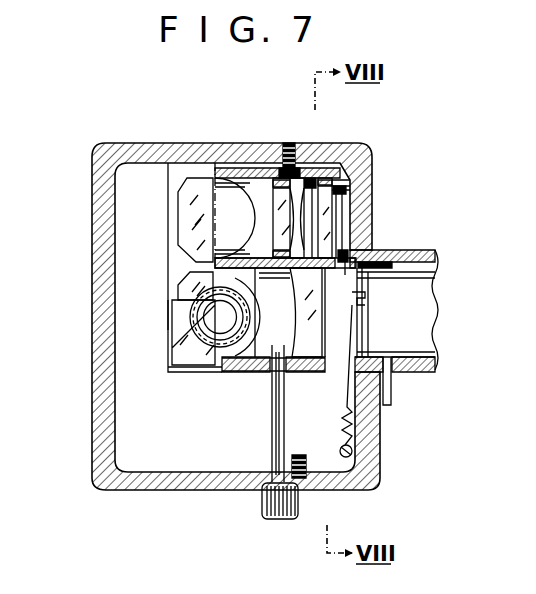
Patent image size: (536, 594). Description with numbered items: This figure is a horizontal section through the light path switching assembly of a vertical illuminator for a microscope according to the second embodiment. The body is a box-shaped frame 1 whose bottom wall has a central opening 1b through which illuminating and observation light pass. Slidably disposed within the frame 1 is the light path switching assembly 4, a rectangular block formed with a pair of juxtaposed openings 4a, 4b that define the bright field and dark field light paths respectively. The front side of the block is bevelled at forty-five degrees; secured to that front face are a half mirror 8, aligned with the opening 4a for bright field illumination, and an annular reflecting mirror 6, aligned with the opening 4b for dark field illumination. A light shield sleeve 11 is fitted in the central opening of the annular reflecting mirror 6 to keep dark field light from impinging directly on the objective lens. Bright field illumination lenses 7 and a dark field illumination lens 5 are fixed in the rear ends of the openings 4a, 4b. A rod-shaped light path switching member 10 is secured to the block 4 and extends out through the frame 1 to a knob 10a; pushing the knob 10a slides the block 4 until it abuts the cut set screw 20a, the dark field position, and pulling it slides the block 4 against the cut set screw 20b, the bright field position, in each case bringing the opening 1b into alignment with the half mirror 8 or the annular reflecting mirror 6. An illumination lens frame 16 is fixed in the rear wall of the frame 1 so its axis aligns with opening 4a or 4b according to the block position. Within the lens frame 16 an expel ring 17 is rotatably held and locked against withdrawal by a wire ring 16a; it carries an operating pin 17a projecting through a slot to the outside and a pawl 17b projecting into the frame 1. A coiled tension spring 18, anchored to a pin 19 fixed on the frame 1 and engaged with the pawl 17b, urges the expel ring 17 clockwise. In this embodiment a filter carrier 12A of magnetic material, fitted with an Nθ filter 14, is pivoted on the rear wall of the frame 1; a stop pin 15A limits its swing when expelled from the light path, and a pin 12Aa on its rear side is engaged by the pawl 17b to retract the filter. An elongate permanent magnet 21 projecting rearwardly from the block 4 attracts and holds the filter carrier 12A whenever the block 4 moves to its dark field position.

The box-shaped frame 1 is at (100, 238).
The opening 1b is at (166, 313).
The light path switching assembly 4 is at (236, 372).
The opening 4a is at (254, 197).
The opening 4b is at (270, 342).
The dark field illumination lens 5 is at (300, 310).
The annular reflecting mirror 6 is at (180, 290).
The bright field illumination lenses 7 is at (292, 175).
The half mirror 8 is at (182, 225).
The light path switching member 10 is at (272, 445).
The knob 10a is at (270, 508).
The light shield sleeve 11 is at (178, 328).
The filter carrier 12A is at (330, 176).
The pin 12Aa is at (344, 250).
The Nθ filter 14 is at (346, 200).
The stop pin 15A is at (340, 190).
The illumination lens frame 16 is at (432, 369).
The wire ring 16a is at (360, 324).
The expel ring 17 is at (412, 256).
The operating pin 17a is at (391, 390).
The pawl 17b is at (366, 299).
The coiled tension spring 18 is at (345, 418).
The pin 19 is at (352, 452).
The cut set screw 20a is at (282, 150).
The cut set screw 20b is at (300, 466).
The permanent magnet 21 is at (336, 284).